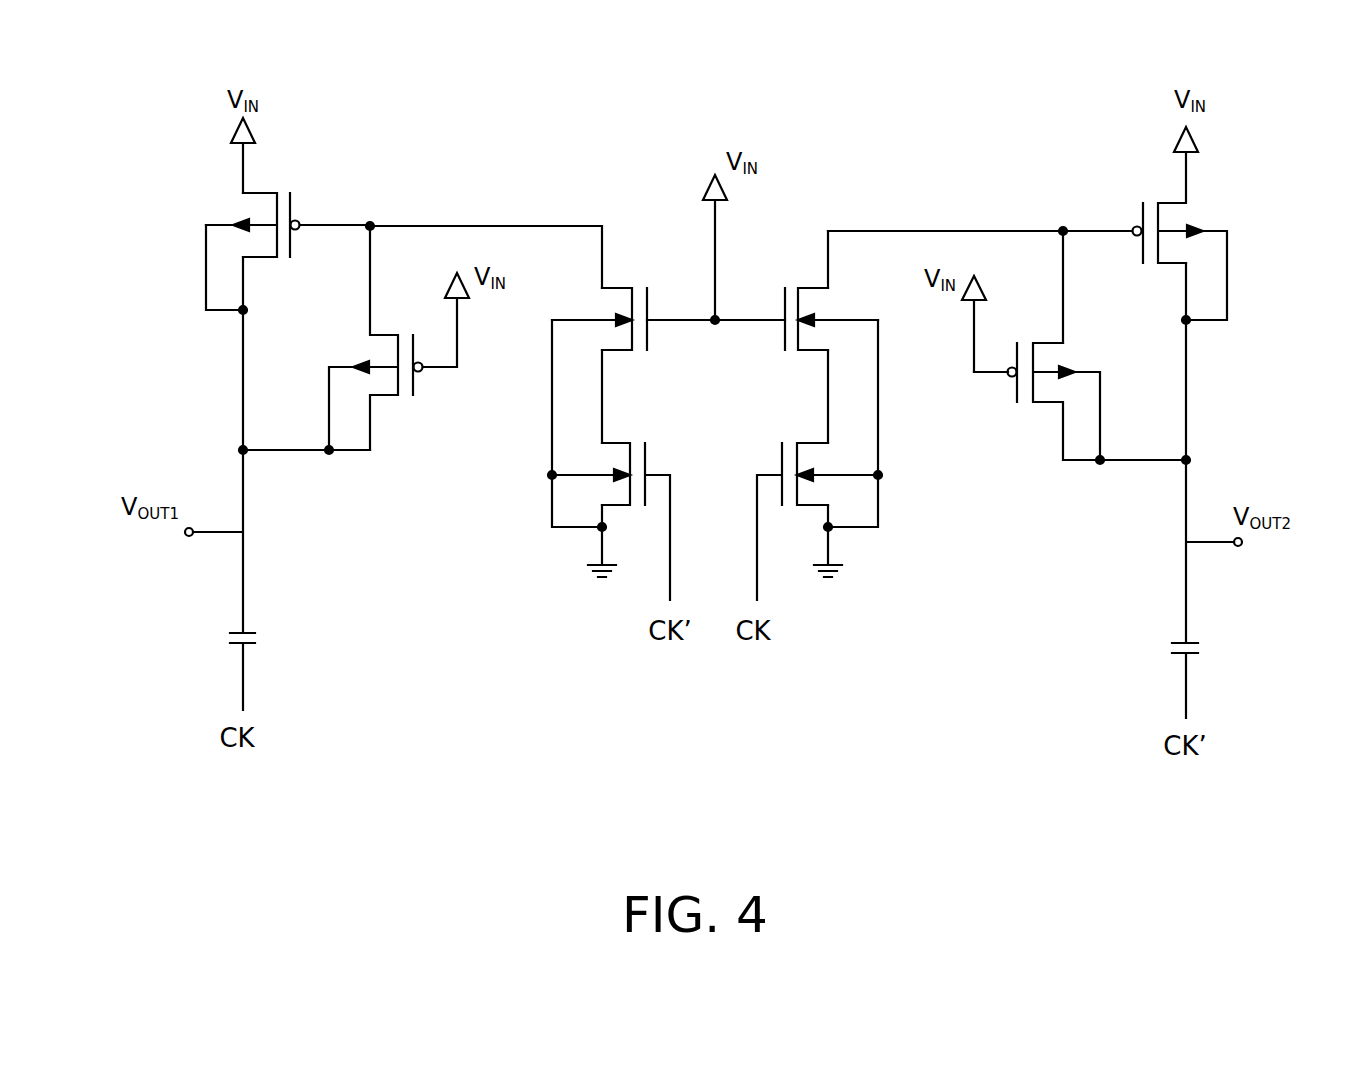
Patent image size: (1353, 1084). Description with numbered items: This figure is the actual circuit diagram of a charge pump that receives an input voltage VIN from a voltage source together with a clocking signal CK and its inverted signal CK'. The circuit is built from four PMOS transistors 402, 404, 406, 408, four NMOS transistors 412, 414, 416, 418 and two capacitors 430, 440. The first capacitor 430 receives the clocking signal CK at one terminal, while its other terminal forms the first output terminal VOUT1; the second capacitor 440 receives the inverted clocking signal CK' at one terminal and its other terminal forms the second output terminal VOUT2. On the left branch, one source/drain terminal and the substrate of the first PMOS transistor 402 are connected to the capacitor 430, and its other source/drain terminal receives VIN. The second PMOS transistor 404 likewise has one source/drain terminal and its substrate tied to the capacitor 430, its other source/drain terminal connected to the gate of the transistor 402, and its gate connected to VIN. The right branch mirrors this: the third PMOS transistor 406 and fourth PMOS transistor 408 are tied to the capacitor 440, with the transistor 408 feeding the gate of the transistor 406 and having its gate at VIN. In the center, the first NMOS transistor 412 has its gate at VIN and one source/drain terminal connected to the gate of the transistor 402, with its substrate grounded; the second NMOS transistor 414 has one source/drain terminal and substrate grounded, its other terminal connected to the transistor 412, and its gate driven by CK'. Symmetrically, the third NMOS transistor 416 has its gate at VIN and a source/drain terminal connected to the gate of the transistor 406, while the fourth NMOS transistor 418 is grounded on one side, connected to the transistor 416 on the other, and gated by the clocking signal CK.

The first PMOS transistor 402 is at (283, 186).
The second PMOS transistor 404 is at (402, 404).
The third PMOS transistor 406 is at (1151, 194).
The fourth PMOS transistor 408 is at (1027, 412).
The first NMOS transistor 412 is at (630, 284).
The second NMOS transistor 414 is at (635, 514).
The third NMOS transistor 416 is at (798, 284).
The fourth NMOS transistor 418 is at (790, 514).
The first capacitor 430 is at (224, 637).
The second capacitor 440 is at (1199, 645).